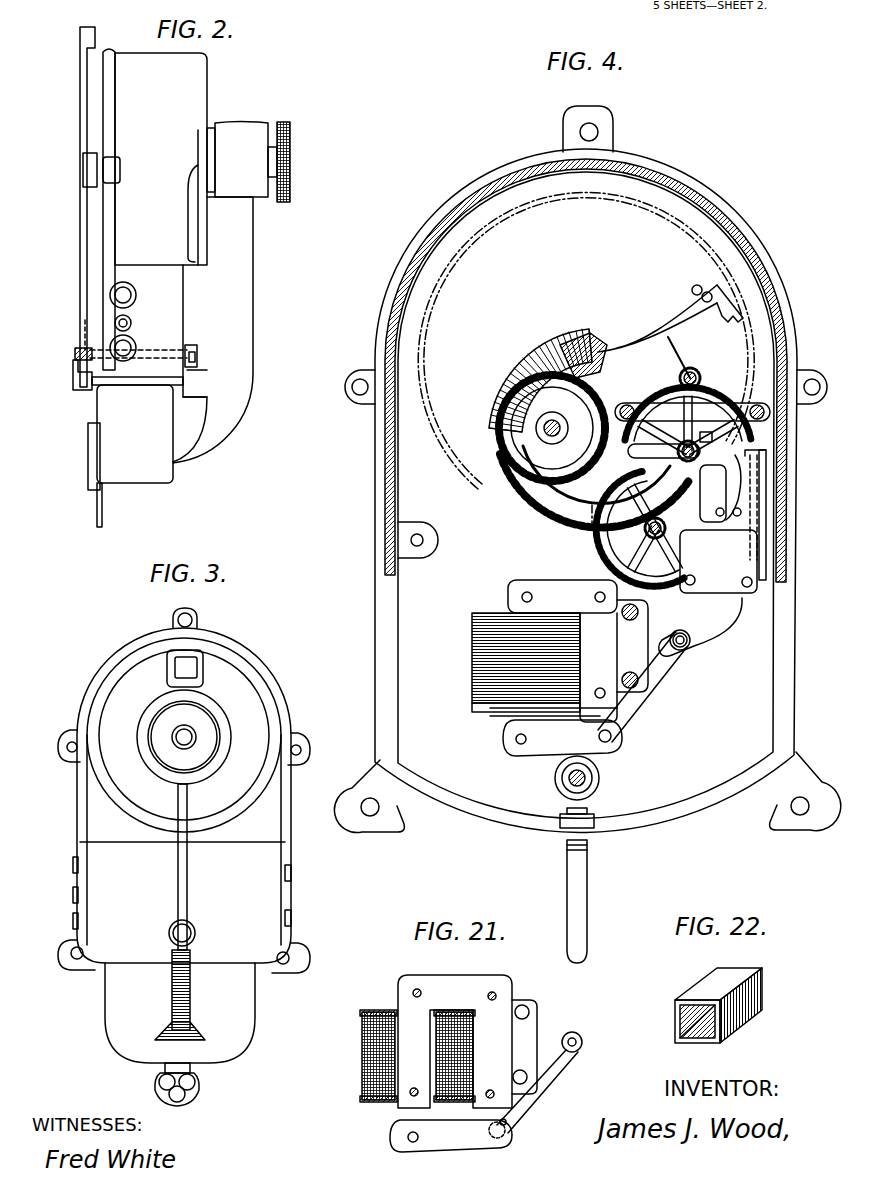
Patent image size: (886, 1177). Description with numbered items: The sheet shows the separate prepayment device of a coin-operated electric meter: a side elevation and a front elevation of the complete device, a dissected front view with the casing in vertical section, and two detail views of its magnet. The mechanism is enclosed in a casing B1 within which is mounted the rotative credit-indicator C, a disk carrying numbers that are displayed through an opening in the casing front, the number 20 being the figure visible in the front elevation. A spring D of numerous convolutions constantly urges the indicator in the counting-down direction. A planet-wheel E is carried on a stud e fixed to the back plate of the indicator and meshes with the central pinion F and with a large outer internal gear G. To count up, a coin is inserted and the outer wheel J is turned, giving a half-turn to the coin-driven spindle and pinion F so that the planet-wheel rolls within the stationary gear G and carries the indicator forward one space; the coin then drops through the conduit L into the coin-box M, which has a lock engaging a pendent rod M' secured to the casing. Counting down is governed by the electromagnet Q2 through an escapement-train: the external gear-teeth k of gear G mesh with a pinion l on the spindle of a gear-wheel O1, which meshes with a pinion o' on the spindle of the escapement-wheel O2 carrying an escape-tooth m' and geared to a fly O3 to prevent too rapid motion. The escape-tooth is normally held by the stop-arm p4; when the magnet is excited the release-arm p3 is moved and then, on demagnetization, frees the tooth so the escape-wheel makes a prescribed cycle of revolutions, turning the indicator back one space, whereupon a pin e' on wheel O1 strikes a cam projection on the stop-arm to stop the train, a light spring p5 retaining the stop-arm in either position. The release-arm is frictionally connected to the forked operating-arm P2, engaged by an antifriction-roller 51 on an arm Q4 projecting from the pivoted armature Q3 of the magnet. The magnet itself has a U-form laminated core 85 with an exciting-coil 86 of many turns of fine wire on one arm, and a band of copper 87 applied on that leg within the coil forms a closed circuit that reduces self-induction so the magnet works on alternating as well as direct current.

In FIG. 2, the casing B1 is at (140, 212).
In FIG. 3, the casing B1 is at (184, 790).
In FIG. 4, the casing B1 is at (376, 466).
In FIG. 2, the outer wheel J is at (290, 185).
In FIG. 3, the outer wheel J is at (215, 753).
In FIG. 2, the conduit L is at (213, 330).
In FIG. 3, the conduit L is at (178, 880).
In FIG. 2, the coin-box M is at (135, 452).
In FIG. 3, the coin-box M is at (180, 1028).
In FIG. 3, the dial window 20 is at (185, 668).
In FIG. 4, the credit-indicator C is at (586, 340).
In FIG. 4, the spring D is at (520, 352).
In FIG. 4, the central pinion F is at (607, 365).
In FIG. 4, the planet-wheel E is at (552, 428).
In FIG. 4, the stud e is at (539, 441).
In FIG. 4, the internal gear G is at (505, 478).
In FIG. 4, the external gear-teeth k is at (575, 530).
In FIG. 4, the fly O3 is at (692, 362).
In FIG. 4, the escapement-wheel O2 is at (725, 400).
In FIG. 4, the escape-tooth m' is at (721, 435).
In FIG. 4, the pinion o' is at (675, 456).
In FIG. 4, the pinion l is at (700, 512).
In FIG. 4, the pin e' is at (718, 524).
In FIG. 4, the gear-wheel O1 is at (672, 545).
In FIG. 4, the release-arm p3 is at (748, 488).
In FIG. 4, the stop-arm p4 is at (745, 495).
In FIG. 4, the light spring p5 is at (740, 502).
In FIG. 4, the electromagnet Q2 is at (535, 651).
In FIG. 4, the arm Q4 is at (636, 700).
In FIG. 4, the operating-arm P2 is at (716, 622).
In FIG. 4, the antifriction-roller 51 is at (686, 655).
In FIG. 21, the antifriction-roller 51 is at (544, 1068).
In FIG. 4, the armature Q3 is at (545, 758).
In FIG. 4, the pendent rod M' is at (590, 885).
In FIG. 21, the laminated core 85 is at (463, 1063).
In FIG. 21, the exciting-coil 86 is at (362, 1068).
In FIG. 21, the band of copper 87 is at (436, 1047).
In FIG. 22, the band of copper 87 is at (703, 990).